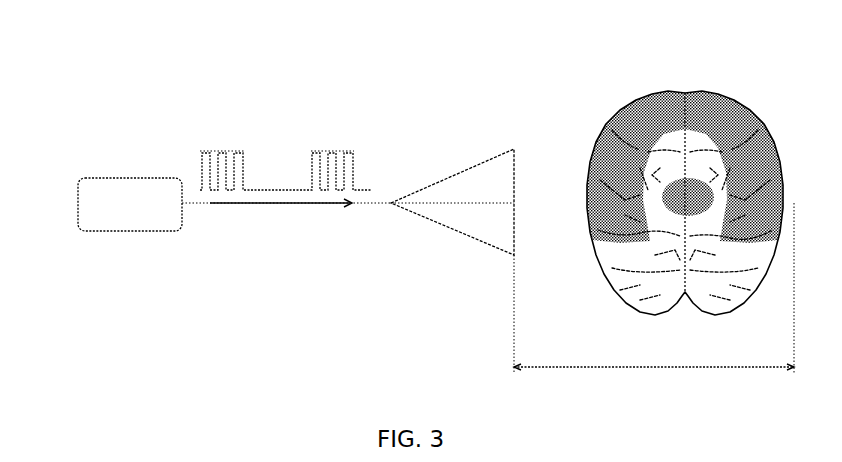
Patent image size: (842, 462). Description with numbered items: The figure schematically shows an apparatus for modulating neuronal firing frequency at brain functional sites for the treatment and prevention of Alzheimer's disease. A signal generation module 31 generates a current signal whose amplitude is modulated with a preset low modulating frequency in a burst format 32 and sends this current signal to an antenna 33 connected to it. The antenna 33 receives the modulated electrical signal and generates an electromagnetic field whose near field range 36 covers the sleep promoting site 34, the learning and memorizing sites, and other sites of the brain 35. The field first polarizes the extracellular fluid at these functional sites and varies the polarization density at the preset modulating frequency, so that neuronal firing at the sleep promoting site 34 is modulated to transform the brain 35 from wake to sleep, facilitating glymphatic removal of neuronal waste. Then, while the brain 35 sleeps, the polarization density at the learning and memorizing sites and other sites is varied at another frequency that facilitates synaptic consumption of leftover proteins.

The signal generation module 31 is at (105, 176).
The burst format 32 is at (218, 140).
The antenna 33 is at (460, 170).
The sleep promoting site 34 is at (661, 164).
The brain 35 is at (660, 92).
The near field range 36 is at (654, 303).